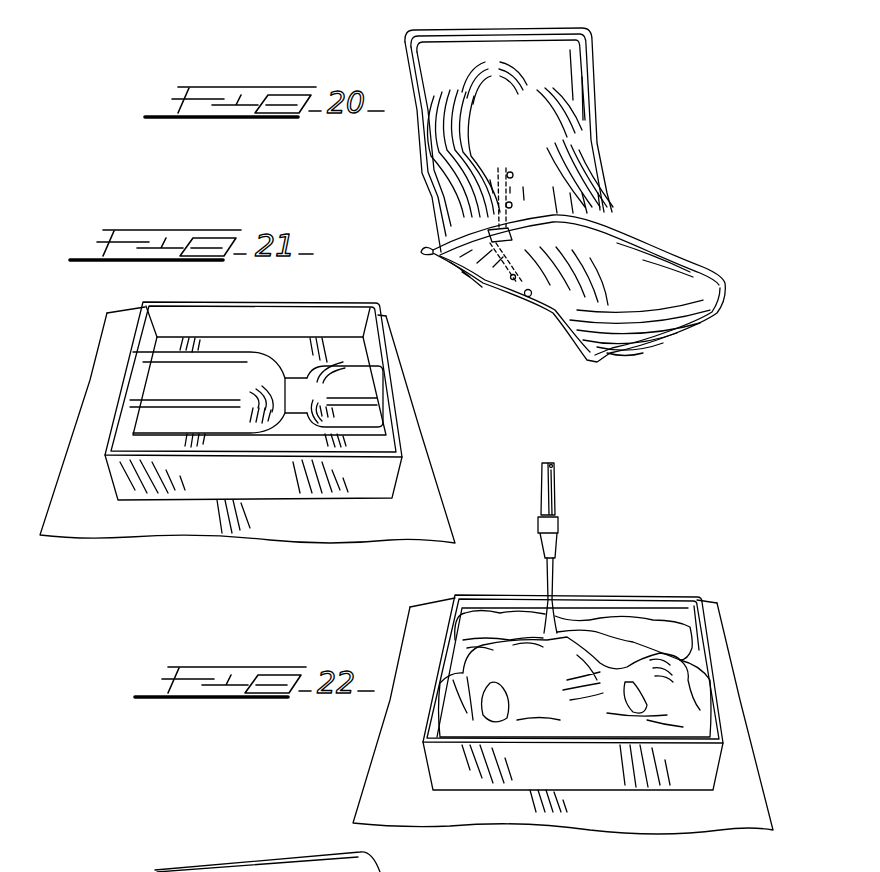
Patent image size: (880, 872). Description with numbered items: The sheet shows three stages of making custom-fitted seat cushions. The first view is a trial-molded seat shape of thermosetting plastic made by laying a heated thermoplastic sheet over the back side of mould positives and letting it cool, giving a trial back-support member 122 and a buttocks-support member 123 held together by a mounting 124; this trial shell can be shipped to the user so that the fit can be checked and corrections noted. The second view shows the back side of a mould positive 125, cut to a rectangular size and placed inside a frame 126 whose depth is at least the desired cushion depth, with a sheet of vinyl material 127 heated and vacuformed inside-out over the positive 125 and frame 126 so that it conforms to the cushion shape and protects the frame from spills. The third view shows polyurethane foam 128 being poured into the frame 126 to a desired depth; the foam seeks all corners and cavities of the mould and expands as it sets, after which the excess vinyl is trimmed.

In FIG. 20, the back-support member 122 is at (583, 87).
In FIG. 20, the buttocks-support member 123 is at (668, 262).
In FIG. 20, the mounting 124 is at (487, 215).
In FIG. 21, the mould positive 125 is at (362, 388).
In FIG. 22, the mould positive 125 is at (700, 673).
In FIG. 21, the frame 126 is at (258, 322).
In FIG. 22, the frame 126 is at (636, 606).
In FIG. 21, the vinyl material 127 is at (425, 507).
In FIG. 22, the vinyl material 127 is at (740, 798).
In FIG. 22, the polyurethane foam 128 is at (553, 585).